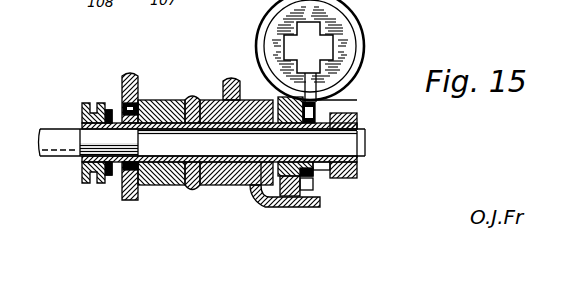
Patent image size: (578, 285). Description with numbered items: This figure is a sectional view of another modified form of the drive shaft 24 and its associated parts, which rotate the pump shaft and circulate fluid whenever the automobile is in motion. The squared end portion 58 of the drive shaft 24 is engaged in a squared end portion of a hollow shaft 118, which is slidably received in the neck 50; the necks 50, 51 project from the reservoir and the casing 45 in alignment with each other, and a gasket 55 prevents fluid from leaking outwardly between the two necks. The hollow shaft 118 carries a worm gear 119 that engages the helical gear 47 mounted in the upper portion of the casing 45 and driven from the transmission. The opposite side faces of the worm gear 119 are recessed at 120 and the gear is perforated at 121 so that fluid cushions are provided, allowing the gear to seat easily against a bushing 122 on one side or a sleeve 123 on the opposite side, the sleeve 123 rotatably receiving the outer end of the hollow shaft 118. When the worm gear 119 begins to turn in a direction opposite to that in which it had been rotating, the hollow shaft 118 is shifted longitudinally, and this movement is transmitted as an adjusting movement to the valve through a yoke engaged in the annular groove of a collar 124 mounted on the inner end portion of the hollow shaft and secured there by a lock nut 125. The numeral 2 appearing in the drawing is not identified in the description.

The flange 2 is at (123, 77).
The drive shaft 24 is at (53, 159).
The casing 45 is at (233, 80).
The helical gear 47 is at (357, 38).
The neck 50 is at (162, 187).
The neck 51 is at (230, 187).
The gasket 55 is at (195, 188).
The squared end portion 58 is at (118, 167).
The hollow shaft 118 is at (367, 128).
The worm gear 119 is at (290, 207).
The recess 120 is at (317, 167).
The perforation 121 is at (338, 100).
The bushing 122 is at (213, 107).
The sleeve 123 is at (347, 180).
The collar 124 is at (80, 110).
The lock nut 125 is at (103, 178).